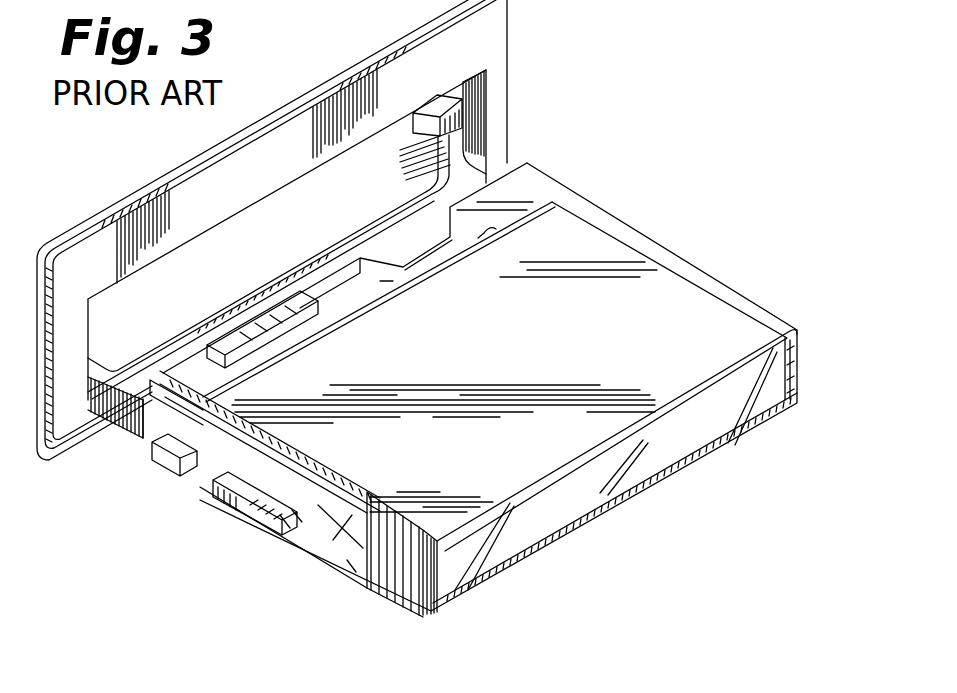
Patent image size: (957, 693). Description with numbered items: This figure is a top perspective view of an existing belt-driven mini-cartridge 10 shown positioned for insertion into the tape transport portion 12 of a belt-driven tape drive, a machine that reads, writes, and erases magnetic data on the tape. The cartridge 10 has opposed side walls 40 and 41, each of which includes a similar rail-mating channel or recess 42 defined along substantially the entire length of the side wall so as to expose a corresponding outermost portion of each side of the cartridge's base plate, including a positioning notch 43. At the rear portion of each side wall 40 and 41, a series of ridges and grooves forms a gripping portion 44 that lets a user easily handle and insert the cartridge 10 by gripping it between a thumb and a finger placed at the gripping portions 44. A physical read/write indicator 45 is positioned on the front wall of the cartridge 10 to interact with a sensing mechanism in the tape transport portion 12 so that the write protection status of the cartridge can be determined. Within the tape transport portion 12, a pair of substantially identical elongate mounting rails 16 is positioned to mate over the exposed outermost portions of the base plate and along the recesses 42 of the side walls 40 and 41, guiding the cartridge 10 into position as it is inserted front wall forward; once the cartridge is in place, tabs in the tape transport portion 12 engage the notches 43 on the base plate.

The mini-cartridge 10 is at (526, 349).
The tape transport portion 12 is at (235, 201).
The elongate mounting rails 16 is at (447, 125).
The side wall 40 is at (792, 362).
The side wall 41 is at (358, 538).
The rail-mating channel or recess 42 is at (160, 455).
The positioning notch 43 is at (200, 477).
The gripping portion 44 is at (403, 577).
The physical read/write indicator 45 is at (251, 320).